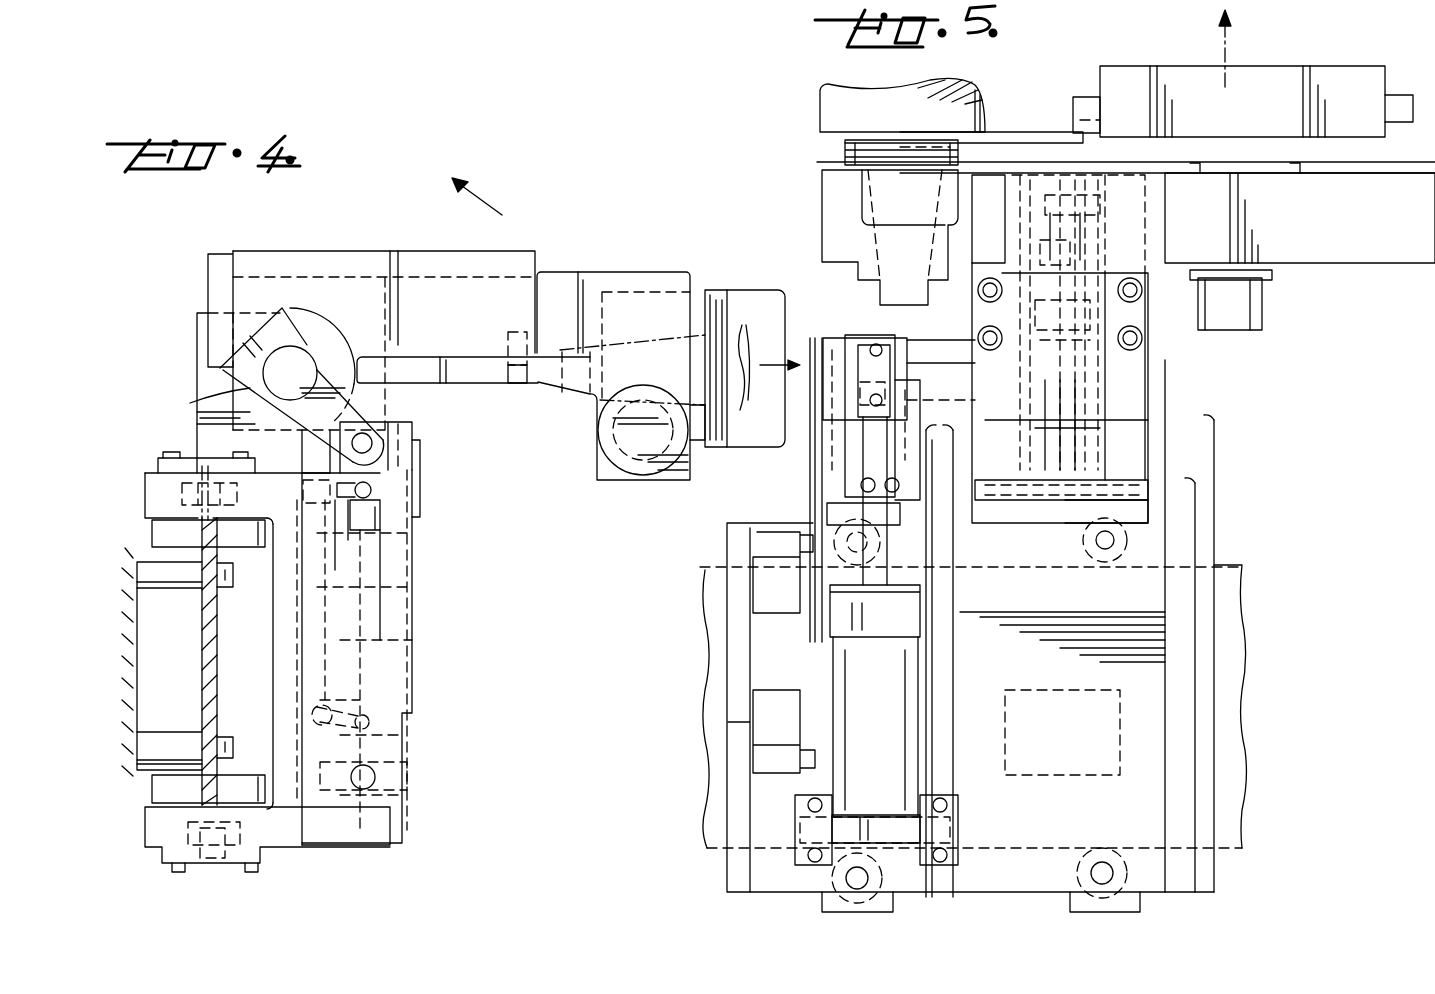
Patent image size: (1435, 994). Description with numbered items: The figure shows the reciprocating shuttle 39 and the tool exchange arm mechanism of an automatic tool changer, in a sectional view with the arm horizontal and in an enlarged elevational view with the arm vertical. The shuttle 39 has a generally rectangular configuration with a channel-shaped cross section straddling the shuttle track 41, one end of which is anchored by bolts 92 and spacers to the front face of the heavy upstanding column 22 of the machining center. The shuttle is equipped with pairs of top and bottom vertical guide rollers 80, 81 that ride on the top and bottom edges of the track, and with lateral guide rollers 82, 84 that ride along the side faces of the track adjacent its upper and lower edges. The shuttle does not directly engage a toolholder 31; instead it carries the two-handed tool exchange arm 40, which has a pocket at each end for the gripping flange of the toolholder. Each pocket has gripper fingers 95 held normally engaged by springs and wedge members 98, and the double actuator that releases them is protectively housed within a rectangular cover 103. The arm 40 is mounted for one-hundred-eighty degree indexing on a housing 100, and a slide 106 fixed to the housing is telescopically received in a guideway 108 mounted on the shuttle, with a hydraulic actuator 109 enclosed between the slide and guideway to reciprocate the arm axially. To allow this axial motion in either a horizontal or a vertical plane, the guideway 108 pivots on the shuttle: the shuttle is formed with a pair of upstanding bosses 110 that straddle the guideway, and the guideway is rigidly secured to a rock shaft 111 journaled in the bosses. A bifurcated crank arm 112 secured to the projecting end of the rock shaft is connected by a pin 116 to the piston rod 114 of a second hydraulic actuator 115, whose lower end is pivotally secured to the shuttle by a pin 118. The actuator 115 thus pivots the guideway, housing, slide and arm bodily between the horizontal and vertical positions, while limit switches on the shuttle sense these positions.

In FIG. 4, the column 22 is at (147, 695).
In FIG. 4, the toolholder 31 is at (577, 393).
In FIG. 5, the toolholder 31 is at (965, 105).
In FIG. 4, the reciprocating shuttle 39 is at (266, 851).
In FIG. 5, the reciprocating shuttle 39 is at (1214, 524).
In FIG. 4, the tool exchange arm 40 is at (725, 440).
In FIG. 5, the tool exchange arm 40 is at (1018, 150).
In FIG. 4, the shuttle track 41 is at (200, 626).
In FIG. 5, the shuttle track 41 is at (1240, 620).
In FIG. 4, the top vertical guide roller 80 is at (148, 505).
In FIG. 5, the top vertical guide roller 80 is at (1082, 540).
In FIG. 4, the bottom vertical guide roller 81 is at (213, 853).
In FIG. 5, the bottom vertical guide roller 81 is at (828, 883).
In FIG. 4, the lateral guide roller 82 is at (248, 543).
In FIG. 4, the lateral guide roller 84 is at (152, 535).
In FIG. 4, the bolt 92 is at (226, 592).
In FIG. 5, the gripper finger 95 is at (1000, 135).
In FIG. 5, the wedge member 98 is at (1088, 98).
In FIG. 4, the housing 100 is at (598, 472).
In FIG. 5, the housing 100 is at (1365, 268).
In FIG. 4, the rectangular cover 103 is at (763, 280).
In FIG. 5, the rectangular cover 103 is at (1260, 312).
In FIG. 4, the slide 106 is at (600, 278).
In FIG. 4, the guideway 108 is at (365, 262).
In FIG. 5, the guideway 108 is at (1135, 418).
In FIG. 5, the hydraulic actuator 109 is at (1088, 322).
In FIG. 5, the upstanding boss 110 is at (945, 365).
In FIG. 4, the rock shaft 111 is at (318, 330).
In FIG. 5, the rock shaft 111 is at (1180, 452).
In FIG. 4, the bifurcated crank arm 112 is at (255, 380).
In FIG. 5, the bifurcated crank arm 112 is at (900, 428).
In FIG. 4, the piston rod 114 is at (380, 515).
In FIG. 5, the piston rod 114 is at (870, 468).
In FIG. 4, the second hydraulic actuator 115 is at (425, 640).
In FIG. 5, the second hydraulic actuator 115 is at (838, 665).
In FIG. 4, the pin 116 is at (372, 438).
In FIG. 4, the pin 118 is at (375, 777).
In FIG. 5, the pin 118 is at (800, 830).